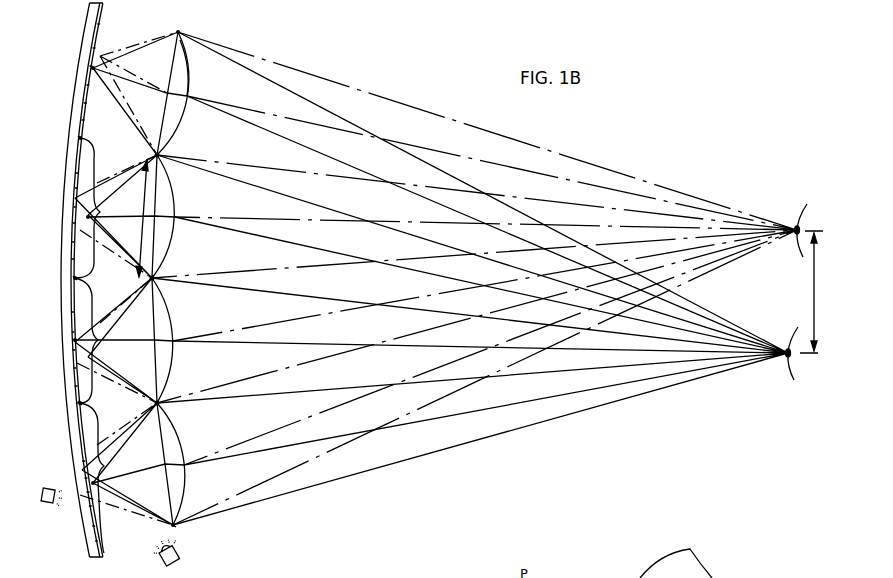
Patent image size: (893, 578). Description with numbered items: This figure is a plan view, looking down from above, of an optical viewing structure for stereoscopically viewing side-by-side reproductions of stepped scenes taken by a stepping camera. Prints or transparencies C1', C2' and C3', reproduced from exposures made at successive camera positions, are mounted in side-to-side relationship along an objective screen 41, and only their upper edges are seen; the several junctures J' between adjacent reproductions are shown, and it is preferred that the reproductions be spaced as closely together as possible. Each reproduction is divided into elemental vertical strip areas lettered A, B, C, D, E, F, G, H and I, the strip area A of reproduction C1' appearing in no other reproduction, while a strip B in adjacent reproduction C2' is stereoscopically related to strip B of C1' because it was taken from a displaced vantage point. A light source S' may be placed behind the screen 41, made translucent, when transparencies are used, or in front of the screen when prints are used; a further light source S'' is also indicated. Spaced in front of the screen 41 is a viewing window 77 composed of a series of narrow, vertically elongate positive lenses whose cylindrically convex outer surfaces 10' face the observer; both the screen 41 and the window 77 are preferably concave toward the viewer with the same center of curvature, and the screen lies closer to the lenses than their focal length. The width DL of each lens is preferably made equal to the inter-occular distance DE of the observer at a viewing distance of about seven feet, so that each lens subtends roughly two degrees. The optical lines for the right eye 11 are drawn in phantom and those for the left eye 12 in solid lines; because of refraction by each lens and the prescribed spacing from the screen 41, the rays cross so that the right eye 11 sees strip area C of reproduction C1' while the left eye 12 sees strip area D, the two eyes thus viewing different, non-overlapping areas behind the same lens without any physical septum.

The objective screen 41 is at (63, 441).
The outer surfaces 10' is at (201, 68).
The viewing window 77 is at (181, 526).
The right eye 11 is at (794, 222).
The left eye 12 is at (786, 345).
The inter-occular distance DE is at (811, 292).
The width of each lens DL is at (139, 218).
The junctures J' is at (89, 262).
The reproduction C3' is at (100, 208).
The reproduction C2' is at (100, 340).
The reproduction C1' is at (106, 478).
The light source S' is at (174, 551).
The light source image S'' is at (52, 511).
The elemental vertical strip area A is at (80, 534).
The elemental strip area B is at (70, 458).
The elemental vertical strip area C is at (65, 376).
The vertical strip area D is at (64, 299).
The image zone E is at (64, 284).
The image zone F is at (65, 266).
The image zone G is at (65, 182).
The image zone H is at (69, 104).
The image zone I is at (84, 17).